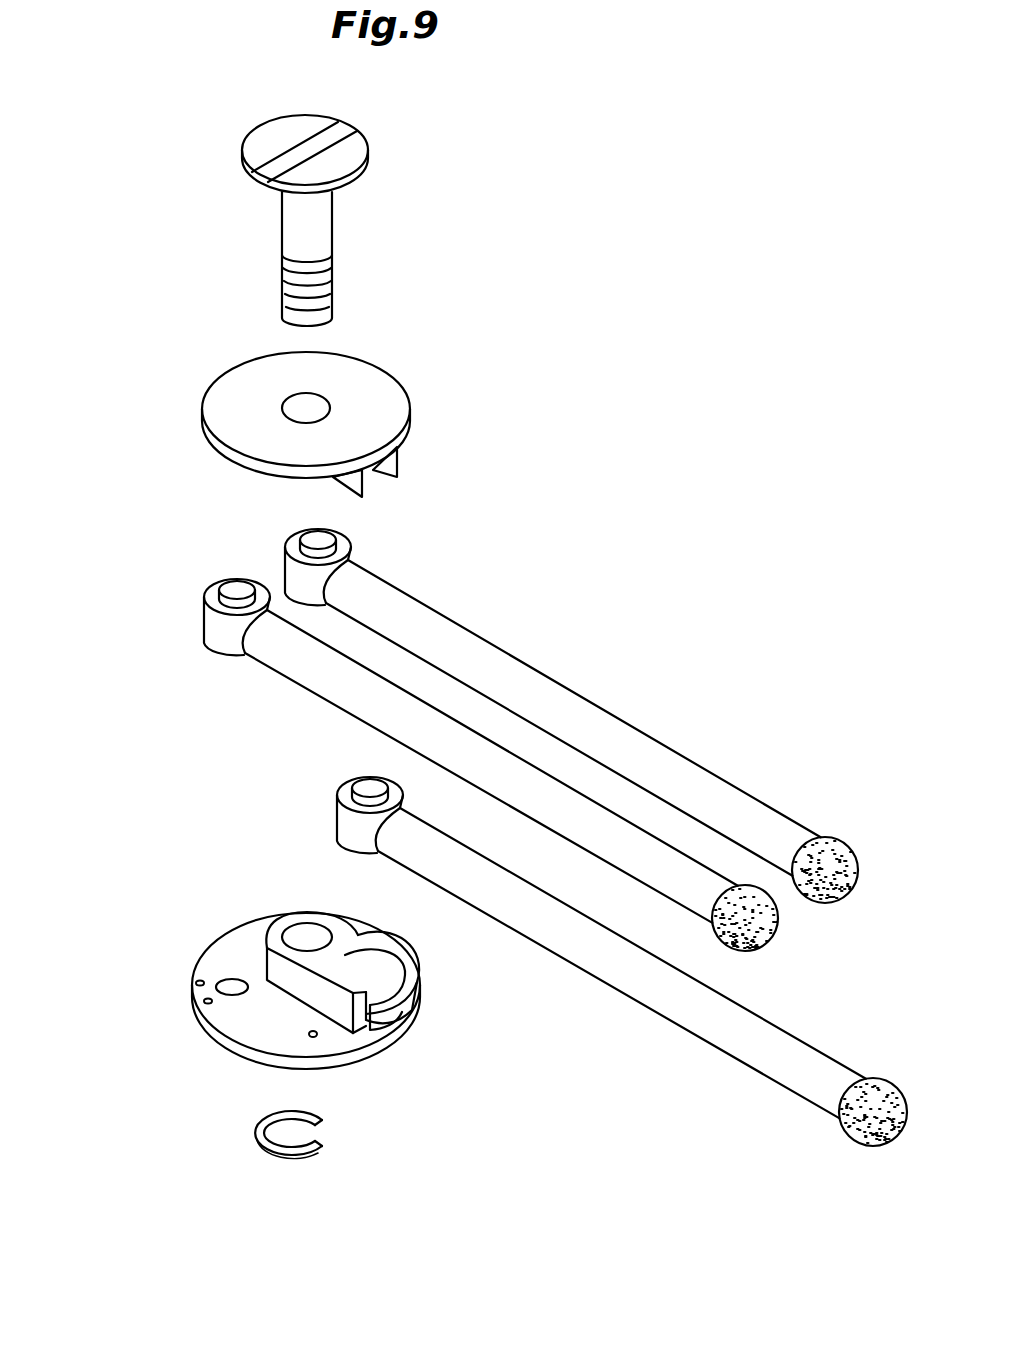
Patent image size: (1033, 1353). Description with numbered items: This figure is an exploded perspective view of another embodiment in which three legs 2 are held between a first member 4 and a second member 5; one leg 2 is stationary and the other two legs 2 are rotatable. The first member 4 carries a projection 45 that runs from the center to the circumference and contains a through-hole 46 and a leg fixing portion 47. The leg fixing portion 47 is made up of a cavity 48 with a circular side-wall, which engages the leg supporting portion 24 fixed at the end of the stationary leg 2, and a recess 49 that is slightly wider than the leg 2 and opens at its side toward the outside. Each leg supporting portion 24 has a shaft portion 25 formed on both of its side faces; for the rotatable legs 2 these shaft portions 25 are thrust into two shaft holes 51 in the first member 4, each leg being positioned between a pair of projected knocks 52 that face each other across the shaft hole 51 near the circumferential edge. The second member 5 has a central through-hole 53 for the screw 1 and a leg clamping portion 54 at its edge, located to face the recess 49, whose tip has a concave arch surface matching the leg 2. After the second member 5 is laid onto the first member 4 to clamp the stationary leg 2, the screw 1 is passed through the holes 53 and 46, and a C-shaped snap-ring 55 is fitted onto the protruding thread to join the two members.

The screw 1 is at (370, 150).
The leg 2 is at (497, 823).
The first member 4 is at (289, 982).
The second member 5 is at (321, 420).
The leg supporting portion 24 is at (217, 632).
The shaft portion 25 is at (217, 583).
The projection 45 is at (316, 933).
The through-hole 46 is at (295, 932).
The leg fixing portion 47 is at (393, 1023).
The cavity 48 is at (365, 960).
The recess 49 is at (393, 1000).
The shaft hole 51 is at (233, 982).
The knock 52 is at (205, 1003).
The through-hole 53 is at (288, 408).
The leg clamping portion 54 is at (397, 462).
The C-shaped snap-ring 55 is at (279, 1157).